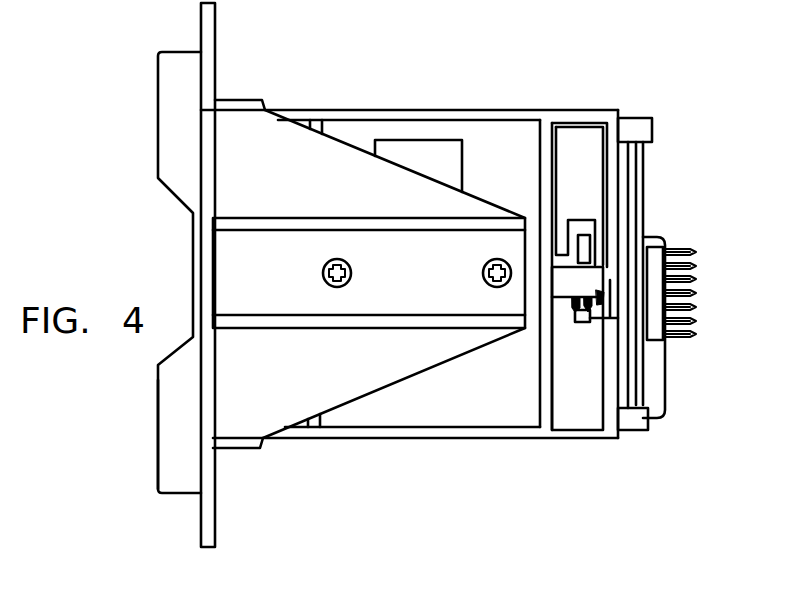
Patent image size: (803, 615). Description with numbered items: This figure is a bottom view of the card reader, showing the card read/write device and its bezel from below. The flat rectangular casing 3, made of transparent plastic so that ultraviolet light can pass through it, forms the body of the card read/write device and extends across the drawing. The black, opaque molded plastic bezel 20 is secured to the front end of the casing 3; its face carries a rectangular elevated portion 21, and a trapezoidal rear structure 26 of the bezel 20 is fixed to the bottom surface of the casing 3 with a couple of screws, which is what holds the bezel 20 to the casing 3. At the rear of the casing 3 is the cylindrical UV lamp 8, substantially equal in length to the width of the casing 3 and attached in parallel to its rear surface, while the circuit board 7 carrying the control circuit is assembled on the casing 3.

The casing 3 is at (401, 438).
The circuit board 7 is at (652, 380).
The UV lamp 8 is at (643, 198).
The bezel 20 is at (141, 260).
The elevated portion 21 is at (157, 423).
The trapezoidal rear structure 26 is at (368, 155).